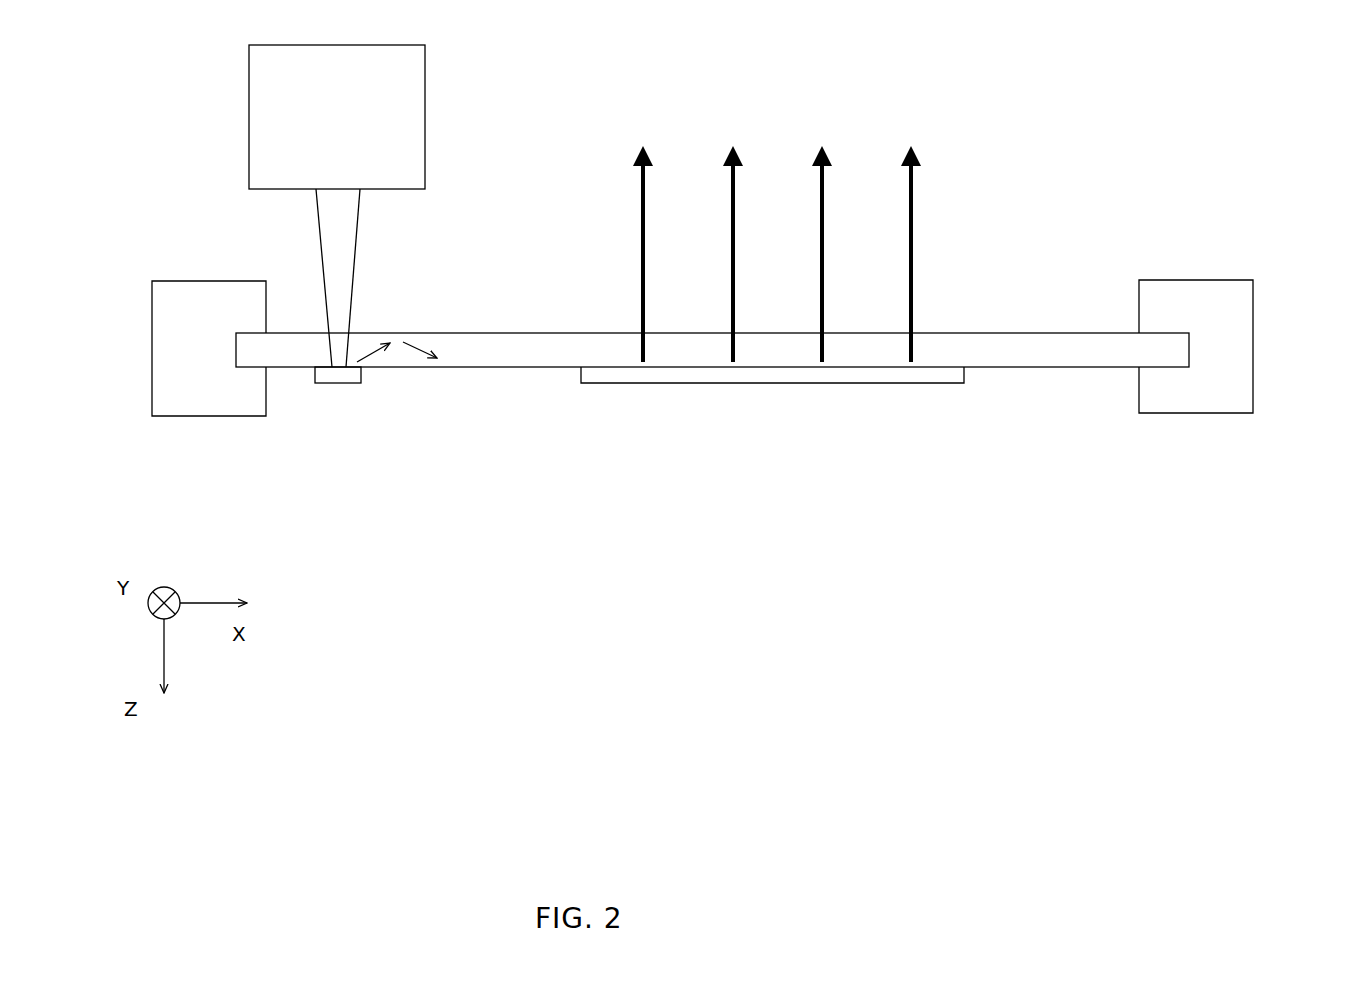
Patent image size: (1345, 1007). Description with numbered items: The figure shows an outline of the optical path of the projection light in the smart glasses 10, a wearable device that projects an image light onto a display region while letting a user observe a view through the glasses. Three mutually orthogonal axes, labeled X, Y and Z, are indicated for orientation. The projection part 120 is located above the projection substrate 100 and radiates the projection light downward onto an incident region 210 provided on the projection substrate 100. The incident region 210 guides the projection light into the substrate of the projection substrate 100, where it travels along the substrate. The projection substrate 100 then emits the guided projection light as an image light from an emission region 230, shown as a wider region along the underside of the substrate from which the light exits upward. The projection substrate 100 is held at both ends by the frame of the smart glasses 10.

The smart glasses 10 is at (1153, 128).
The projection substrate 100 is at (1189, 350).
The projection part 120 is at (425, 110).
The incident region 210 is at (345, 383).
The emission region 230 is at (943, 383).